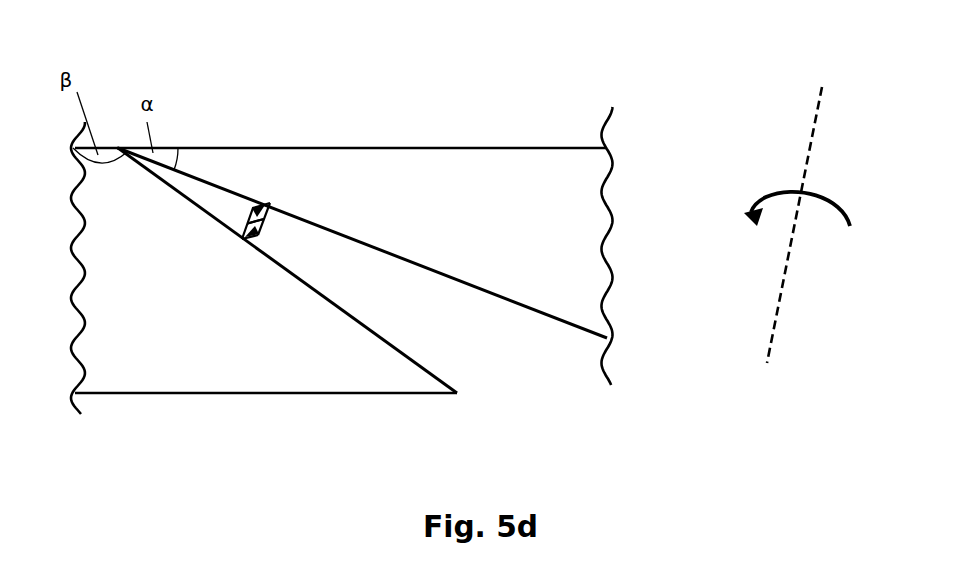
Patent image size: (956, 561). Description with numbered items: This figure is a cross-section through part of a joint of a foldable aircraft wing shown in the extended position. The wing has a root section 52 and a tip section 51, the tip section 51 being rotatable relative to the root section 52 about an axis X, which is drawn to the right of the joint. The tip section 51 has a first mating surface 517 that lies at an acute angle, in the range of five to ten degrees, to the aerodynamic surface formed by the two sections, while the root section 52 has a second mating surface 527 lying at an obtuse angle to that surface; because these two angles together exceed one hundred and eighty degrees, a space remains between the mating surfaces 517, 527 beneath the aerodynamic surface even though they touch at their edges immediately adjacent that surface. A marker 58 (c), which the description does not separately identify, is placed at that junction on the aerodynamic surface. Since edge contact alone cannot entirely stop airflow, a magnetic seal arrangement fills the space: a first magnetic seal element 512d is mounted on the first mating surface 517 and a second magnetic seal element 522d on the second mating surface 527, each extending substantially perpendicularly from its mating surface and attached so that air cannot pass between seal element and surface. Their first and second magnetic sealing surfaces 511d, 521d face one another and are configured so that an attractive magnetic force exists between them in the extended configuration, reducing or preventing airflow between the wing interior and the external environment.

The tip section 51 is at (533, 223).
The root section 52 is at (162, 281).
The incidence point (c) 58 is at (117, 137).
The first mating surface 517 is at (350, 238).
The second mating surface 527 is at (315, 291).
The second magnetic sealing surface 521d is at (255, 207).
The first magnetic seal element 512d is at (269, 205).
The first magnetic sealing surface 511d is at (243, 238).
The second magnetic seal element 522d is at (257, 236).
The axis X is at (788, 265).